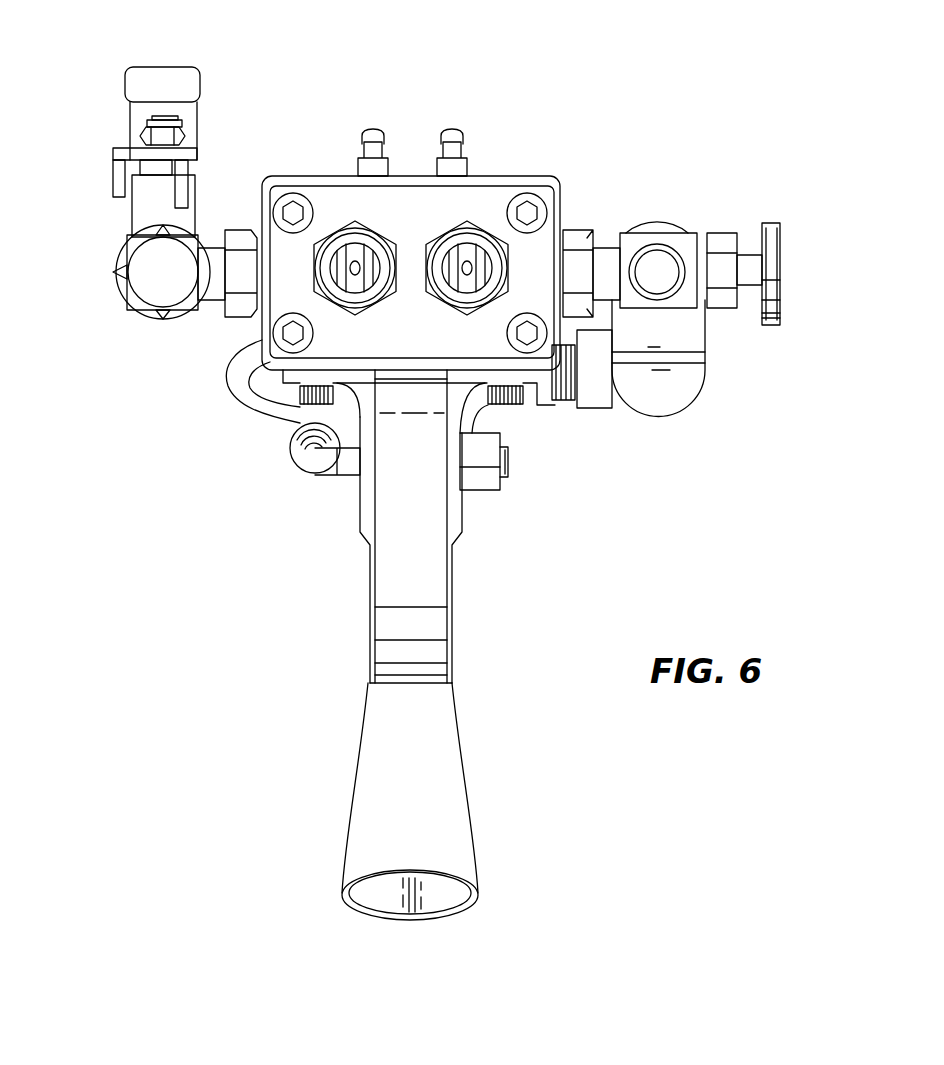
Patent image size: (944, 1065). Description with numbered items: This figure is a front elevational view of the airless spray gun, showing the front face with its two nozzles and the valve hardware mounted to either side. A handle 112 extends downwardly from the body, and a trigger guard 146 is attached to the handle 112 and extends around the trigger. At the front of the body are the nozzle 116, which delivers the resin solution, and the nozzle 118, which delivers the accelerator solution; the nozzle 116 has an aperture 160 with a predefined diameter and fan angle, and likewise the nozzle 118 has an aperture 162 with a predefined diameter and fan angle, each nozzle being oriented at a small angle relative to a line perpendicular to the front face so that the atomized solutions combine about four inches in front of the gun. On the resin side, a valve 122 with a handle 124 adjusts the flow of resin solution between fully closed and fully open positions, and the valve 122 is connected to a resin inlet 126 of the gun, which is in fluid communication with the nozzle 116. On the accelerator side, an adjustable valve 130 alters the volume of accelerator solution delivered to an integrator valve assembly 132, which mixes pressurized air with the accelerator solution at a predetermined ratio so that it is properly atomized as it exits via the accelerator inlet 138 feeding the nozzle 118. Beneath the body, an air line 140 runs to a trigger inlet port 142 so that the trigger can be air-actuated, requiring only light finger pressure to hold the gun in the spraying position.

The handle 112 is at (455, 770).
The nozzle 116 is at (335, 240).
The nozzle 118 is at (490, 240).
The valve 122 is at (128, 220).
The handle 124 is at (153, 66).
The resin inlet 126 is at (145, 262).
The adjustable valve 130 is at (783, 248).
The integrator valve assembly 132 is at (705, 338).
The accelerator inlet 138 is at (657, 255).
The air line 140 is at (225, 373).
The trigger inlet port 142 is at (292, 443).
The trigger guard 146 is at (435, 565).
The aperture 160 is at (355, 262).
The aperture 162 is at (467, 262).